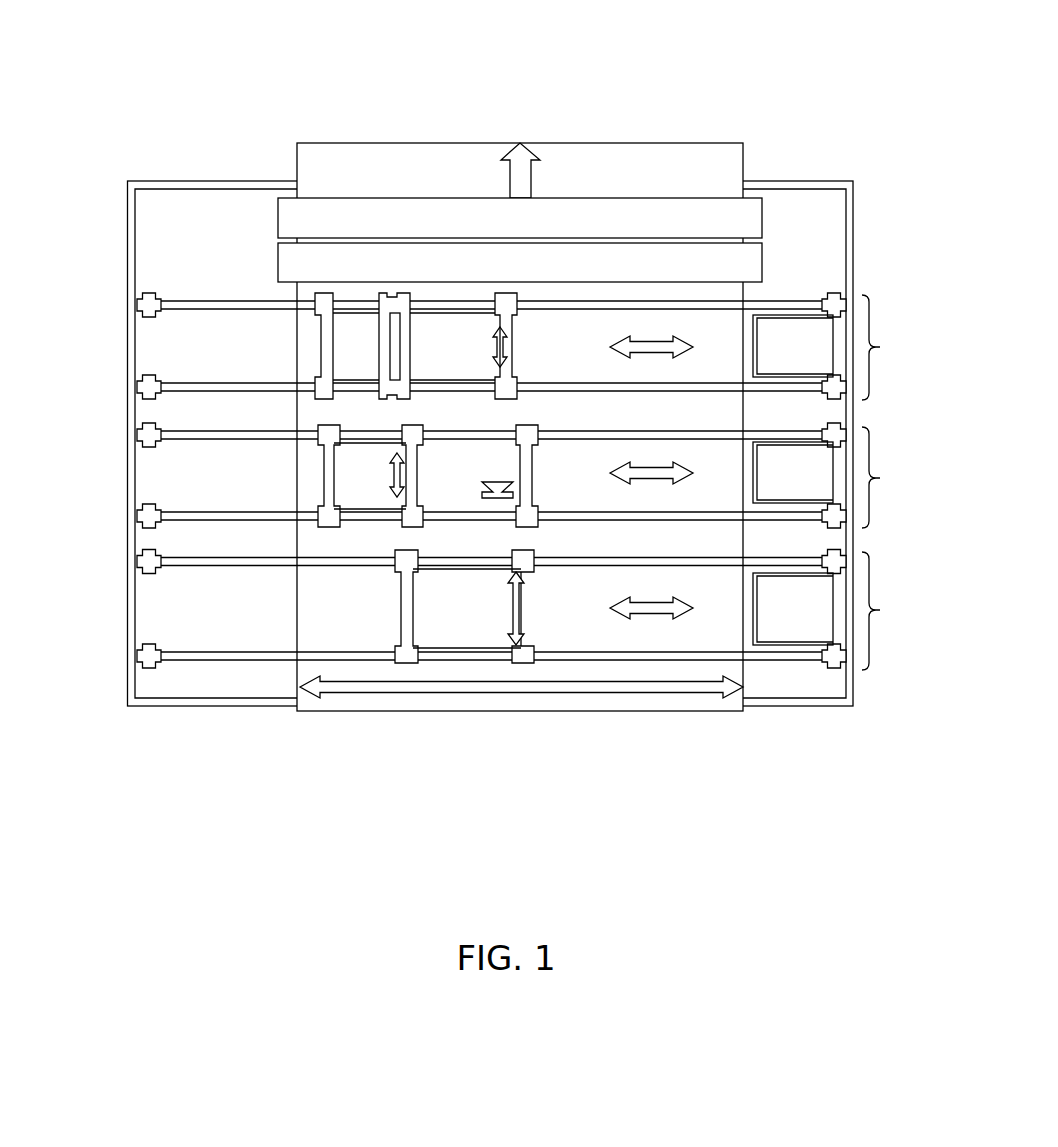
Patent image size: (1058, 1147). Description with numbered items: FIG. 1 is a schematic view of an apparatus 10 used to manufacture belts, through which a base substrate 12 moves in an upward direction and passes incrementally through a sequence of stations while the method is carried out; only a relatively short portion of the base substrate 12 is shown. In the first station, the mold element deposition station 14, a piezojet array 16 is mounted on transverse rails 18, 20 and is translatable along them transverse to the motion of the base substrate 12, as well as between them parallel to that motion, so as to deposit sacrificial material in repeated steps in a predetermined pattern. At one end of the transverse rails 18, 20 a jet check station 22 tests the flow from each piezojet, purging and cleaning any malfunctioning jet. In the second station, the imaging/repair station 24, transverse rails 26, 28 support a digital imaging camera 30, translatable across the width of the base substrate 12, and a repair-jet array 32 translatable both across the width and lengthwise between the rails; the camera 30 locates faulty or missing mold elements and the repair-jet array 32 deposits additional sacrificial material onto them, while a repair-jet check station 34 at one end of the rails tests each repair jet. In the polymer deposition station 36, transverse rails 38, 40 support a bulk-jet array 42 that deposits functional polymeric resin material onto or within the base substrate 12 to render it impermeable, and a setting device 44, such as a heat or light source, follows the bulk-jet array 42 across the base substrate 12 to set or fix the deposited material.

The apparatus 10 is at (770, 93).
The base substrate 12 is at (365, 703).
The mold element deposition station 14 is at (763, 611).
The piezojet array 16 is at (465, 612).
The transverse rail 18 is at (210, 657).
The transverse rail 20 is at (217, 562).
The jet check station 22 is at (798, 615).
The imaging/repair station 24 is at (716, 476).
The transverse rail 26 is at (200, 513).
The transverse rail 28 is at (197, 432).
The digital imaging camera 30 is at (497, 491).
The repair-jet array 32 is at (353, 488).
The repair-jet check station 34 is at (798, 455).
The polymer deposition station 36 is at (763, 347).
The transverse rail 38 is at (198, 385).
The transverse rail 40 is at (235, 301).
The bulk-jet array 42 is at (335, 343).
The setting device 44 is at (725, 221).